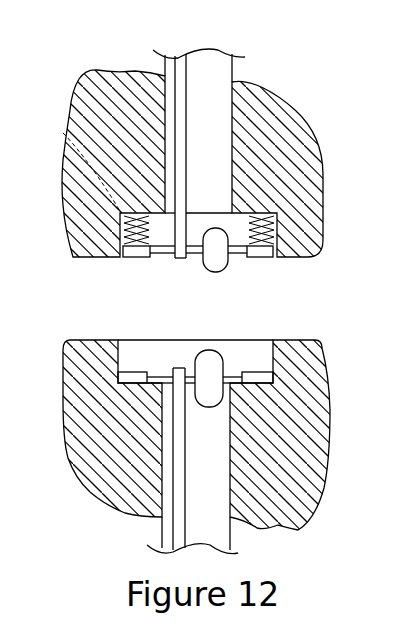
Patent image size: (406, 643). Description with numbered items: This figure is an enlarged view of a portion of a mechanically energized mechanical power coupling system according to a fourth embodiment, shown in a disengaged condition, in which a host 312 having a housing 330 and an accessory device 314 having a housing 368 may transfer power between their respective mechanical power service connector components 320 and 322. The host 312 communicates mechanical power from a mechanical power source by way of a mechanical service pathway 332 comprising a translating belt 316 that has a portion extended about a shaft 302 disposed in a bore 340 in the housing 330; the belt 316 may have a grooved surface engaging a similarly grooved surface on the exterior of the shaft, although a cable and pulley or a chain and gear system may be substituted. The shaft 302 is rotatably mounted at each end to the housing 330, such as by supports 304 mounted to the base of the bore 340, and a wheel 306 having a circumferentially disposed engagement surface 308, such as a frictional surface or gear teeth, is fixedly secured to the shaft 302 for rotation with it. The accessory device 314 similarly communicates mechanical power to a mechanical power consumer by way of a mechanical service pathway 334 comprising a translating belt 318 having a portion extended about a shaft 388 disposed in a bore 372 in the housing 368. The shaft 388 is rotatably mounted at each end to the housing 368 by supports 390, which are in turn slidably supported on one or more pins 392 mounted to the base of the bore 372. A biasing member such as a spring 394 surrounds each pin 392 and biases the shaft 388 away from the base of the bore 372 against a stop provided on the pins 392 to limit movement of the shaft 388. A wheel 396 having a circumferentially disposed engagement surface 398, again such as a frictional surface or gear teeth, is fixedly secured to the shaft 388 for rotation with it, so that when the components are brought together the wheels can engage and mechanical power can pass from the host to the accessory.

The shaft 302 is at (187, 377).
The supports 304 is at (133, 372).
The wheel 306 is at (212, 364).
The engagement surface 308 is at (208, 350).
The host 312 is at (312, 519).
The accessory device 314 is at (261, 89).
The translating belt 316 is at (170, 522).
The translating belt 318 is at (181, 75).
The mechanical power service connector component 320 is at (118, 397).
The mechanical power service connector component 322 is at (258, 200).
The housing 330 is at (300, 421).
The mechanical service pathway 332 is at (197, 503).
The mechanical service pathway 334 is at (215, 68).
The bore 340 is at (265, 341).
The housing 368 is at (286, 118).
The bore 372 is at (263, 214).
The shaft 388 is at (152, 258).
The supports 390 is at (120, 257).
The pins 392 is at (63, 132).
The spring 394 is at (67, 167).
The wheel 396 is at (229, 252).
The engagement surface 398 is at (216, 272).